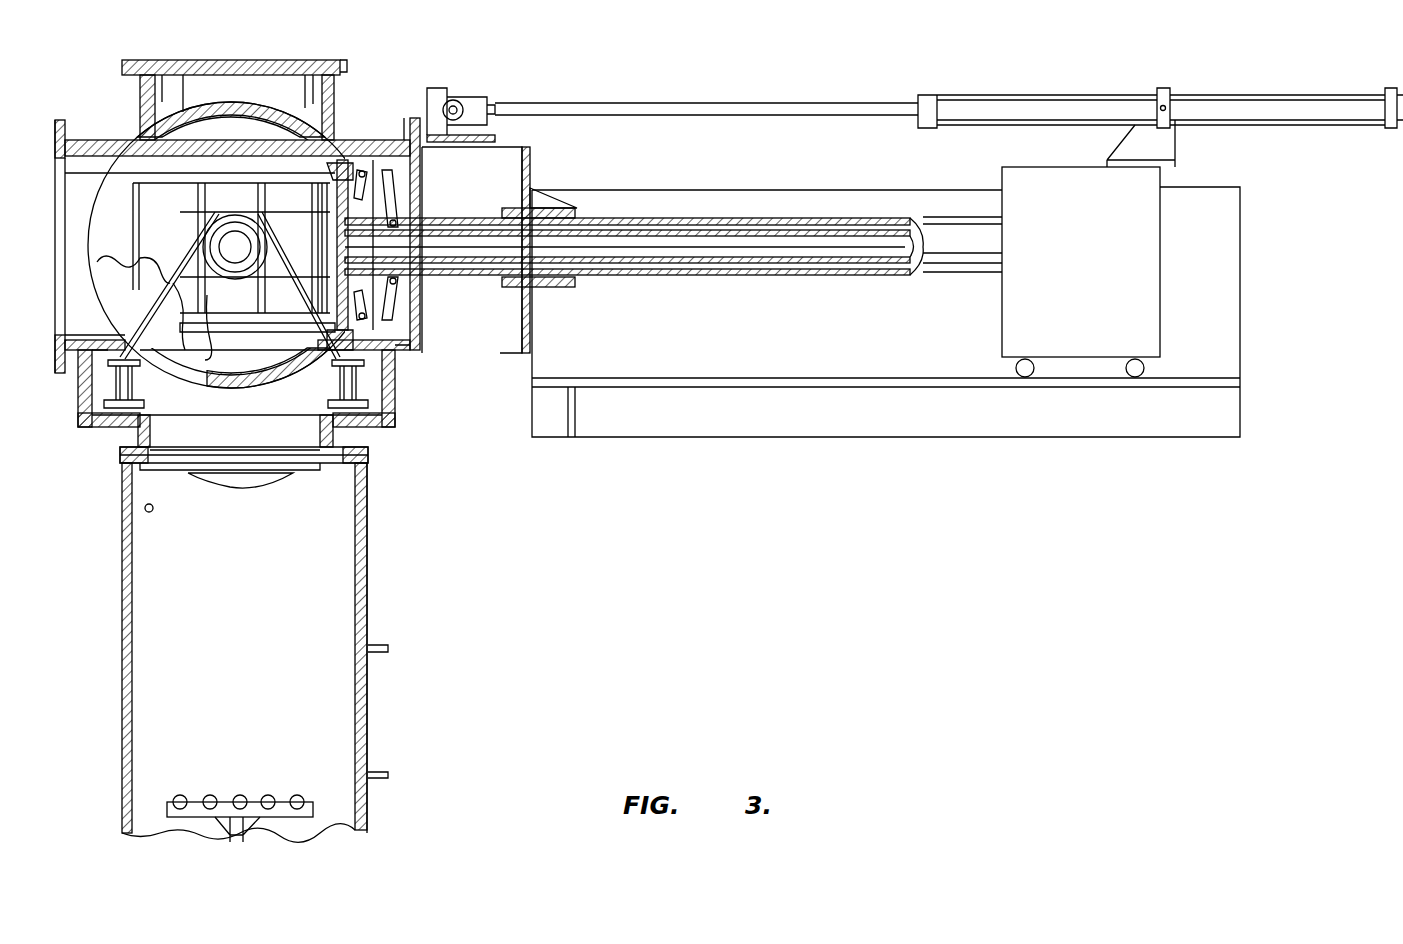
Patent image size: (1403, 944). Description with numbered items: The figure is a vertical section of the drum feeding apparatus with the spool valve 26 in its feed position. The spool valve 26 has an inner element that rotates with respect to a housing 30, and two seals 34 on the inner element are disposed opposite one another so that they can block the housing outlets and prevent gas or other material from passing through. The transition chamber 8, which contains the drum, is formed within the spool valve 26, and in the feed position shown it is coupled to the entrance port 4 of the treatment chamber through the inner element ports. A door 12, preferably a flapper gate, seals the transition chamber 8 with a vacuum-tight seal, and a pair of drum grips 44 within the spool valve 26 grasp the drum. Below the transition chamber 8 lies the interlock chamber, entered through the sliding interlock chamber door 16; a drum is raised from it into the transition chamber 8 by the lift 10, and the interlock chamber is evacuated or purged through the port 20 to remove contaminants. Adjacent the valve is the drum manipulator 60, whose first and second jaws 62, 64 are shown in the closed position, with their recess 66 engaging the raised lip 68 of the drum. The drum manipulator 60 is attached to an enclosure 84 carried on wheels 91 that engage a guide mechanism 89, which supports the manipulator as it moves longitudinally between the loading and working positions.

The entrance port 4 is at (55, 199).
The transition chamber 8 is at (108, 233).
The lift 10 is at (226, 802).
The door 12 is at (292, 474).
The interlock chamber door 16 is at (369, 697).
The port 20 is at (153, 510).
The spool valve 26 is at (136, 136).
The housing 30 is at (332, 92).
The seals 34 is at (262, 125).
The drum grips 44 is at (210, 204).
The drum manipulator 60 is at (603, 296).
The first jaw 62 is at (363, 166).
The second jaw 64 is at (396, 353).
The recess 66 is at (325, 174).
The raised lip 68 is at (322, 198).
The enclosure 84 is at (1160, 272).
The guide mechanism 89 is at (1095, 410).
The wheels 91 is at (1028, 360).